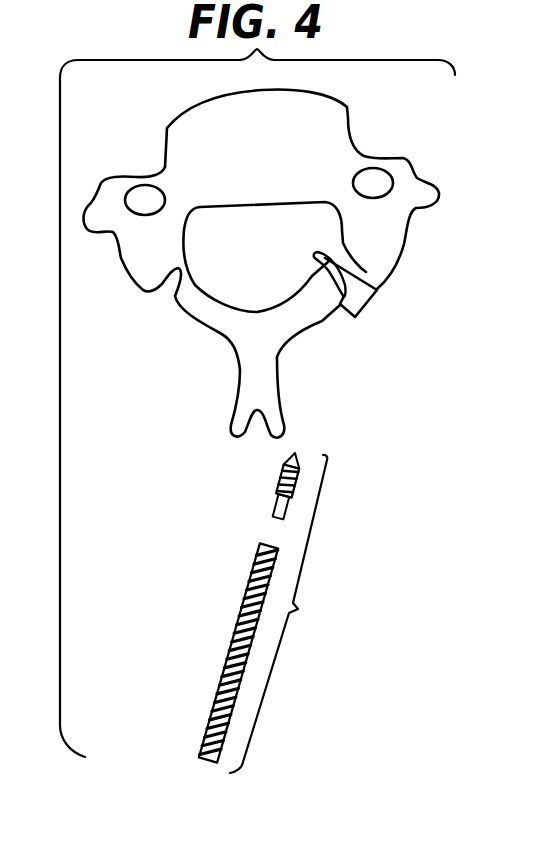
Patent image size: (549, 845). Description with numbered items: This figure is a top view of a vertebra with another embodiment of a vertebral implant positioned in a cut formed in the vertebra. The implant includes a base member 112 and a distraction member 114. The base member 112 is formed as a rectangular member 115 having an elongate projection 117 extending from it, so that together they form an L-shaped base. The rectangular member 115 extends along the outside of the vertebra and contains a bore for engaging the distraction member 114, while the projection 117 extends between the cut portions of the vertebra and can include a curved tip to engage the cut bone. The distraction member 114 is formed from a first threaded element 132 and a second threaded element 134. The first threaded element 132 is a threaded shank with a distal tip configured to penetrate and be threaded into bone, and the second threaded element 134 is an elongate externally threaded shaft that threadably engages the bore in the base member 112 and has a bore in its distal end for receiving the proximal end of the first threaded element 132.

The base member 112 is at (392, 325).
The distraction member 114 is at (287, 614).
The rectangular member 115 is at (345, 318).
The elongate projection 117 is at (318, 255).
The first threaded element 132 is at (276, 501).
The second threaded element 134 is at (236, 643).